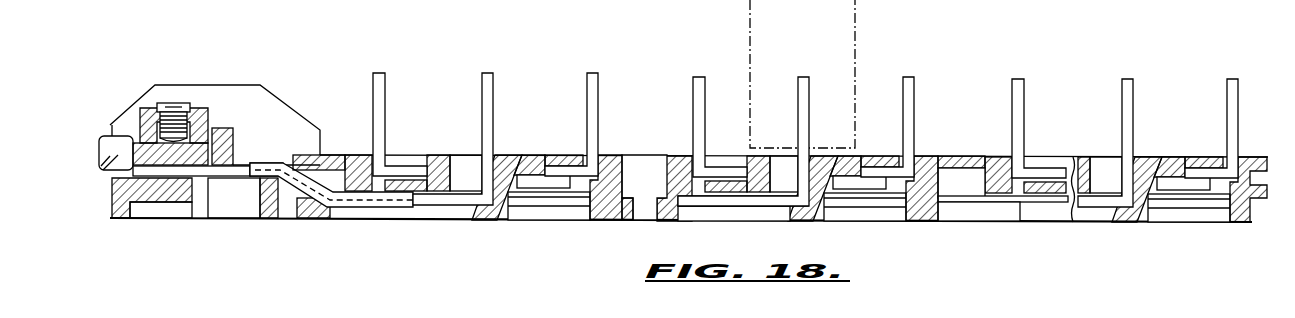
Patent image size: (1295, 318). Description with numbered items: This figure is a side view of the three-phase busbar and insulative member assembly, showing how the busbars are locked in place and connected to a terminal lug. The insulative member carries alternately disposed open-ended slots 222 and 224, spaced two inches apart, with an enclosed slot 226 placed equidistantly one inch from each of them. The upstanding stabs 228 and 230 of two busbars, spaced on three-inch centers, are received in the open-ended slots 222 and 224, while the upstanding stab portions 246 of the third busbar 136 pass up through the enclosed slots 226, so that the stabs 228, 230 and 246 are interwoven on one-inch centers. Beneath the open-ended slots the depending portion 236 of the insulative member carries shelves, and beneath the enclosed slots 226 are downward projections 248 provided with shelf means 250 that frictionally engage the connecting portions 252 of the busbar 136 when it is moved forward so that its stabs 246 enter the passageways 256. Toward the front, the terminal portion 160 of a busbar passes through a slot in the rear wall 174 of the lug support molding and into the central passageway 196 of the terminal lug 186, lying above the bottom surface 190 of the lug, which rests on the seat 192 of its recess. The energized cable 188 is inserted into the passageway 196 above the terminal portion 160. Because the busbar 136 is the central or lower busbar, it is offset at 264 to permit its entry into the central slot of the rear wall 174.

The third busbar 136 is at (745, 207).
The terminal portion 160 is at (240, 166).
The rear wall 174 is at (233, 138).
The terminal lug 186 is at (150, 108).
The energized cable 188 is at (105, 136).
The bottom surface 190 is at (212, 186).
The seat 192 is at (165, 187).
The central passageway 196 is at (172, 103).
The open-ended slot 222 is at (575, 162).
The open-ended slot 224 is at (362, 165).
The enclosed slot 226 is at (438, 165).
The upstanding stab 228 is at (612, 60).
The upstanding stab 230 is at (385, 60).
The depending portion 236 is at (612, 222).
The upstanding stab portion 246 is at (500, 60).
The downward projection 248 is at (500, 222).
The shelf means 250 is at (490, 222).
The connecting portion 252 is at (1105, 222).
The passageway 256 is at (478, 158).
The offset 264 is at (300, 195).